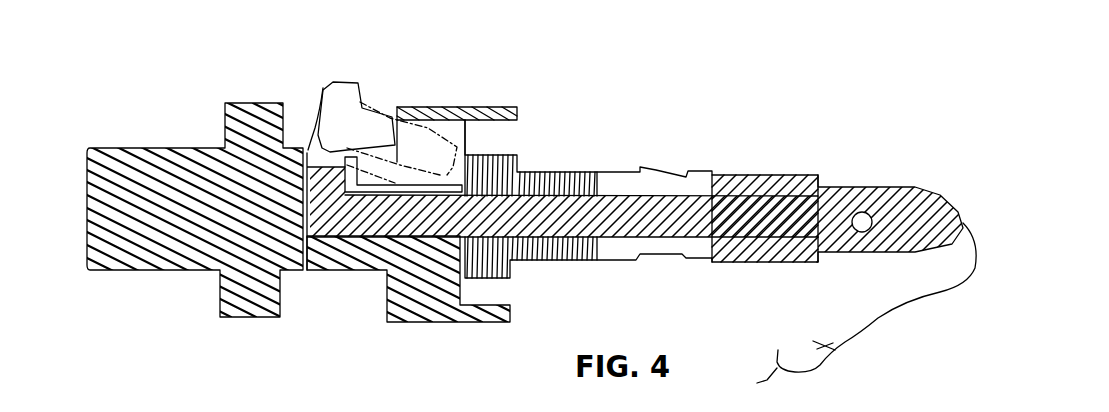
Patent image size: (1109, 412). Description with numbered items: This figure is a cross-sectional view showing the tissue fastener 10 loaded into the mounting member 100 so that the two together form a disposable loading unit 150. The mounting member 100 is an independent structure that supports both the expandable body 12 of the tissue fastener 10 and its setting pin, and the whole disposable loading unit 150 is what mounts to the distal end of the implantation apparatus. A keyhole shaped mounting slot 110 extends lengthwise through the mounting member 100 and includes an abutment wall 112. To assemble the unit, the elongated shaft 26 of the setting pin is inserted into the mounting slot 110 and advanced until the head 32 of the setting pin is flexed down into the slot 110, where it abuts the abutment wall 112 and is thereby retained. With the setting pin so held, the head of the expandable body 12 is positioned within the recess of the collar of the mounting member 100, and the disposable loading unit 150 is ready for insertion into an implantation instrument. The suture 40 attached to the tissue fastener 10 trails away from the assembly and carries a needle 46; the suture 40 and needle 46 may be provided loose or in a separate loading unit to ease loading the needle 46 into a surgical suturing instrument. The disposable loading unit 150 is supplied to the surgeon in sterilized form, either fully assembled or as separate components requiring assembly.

The tissue fastener 10 is at (716, 141).
The expandable body 12 is at (477, 140).
The elongated shaft 26 is at (365, 272).
The head 32 is at (323, 88).
The suture 40 is at (875, 313).
The needle 46 is at (765, 380).
The mounting member 100 is at (181, 322).
The mounting slot 110 is at (307, 153).
The abutment wall 112 is at (450, 118).
The disposable loading unit 150 is at (653, 97).